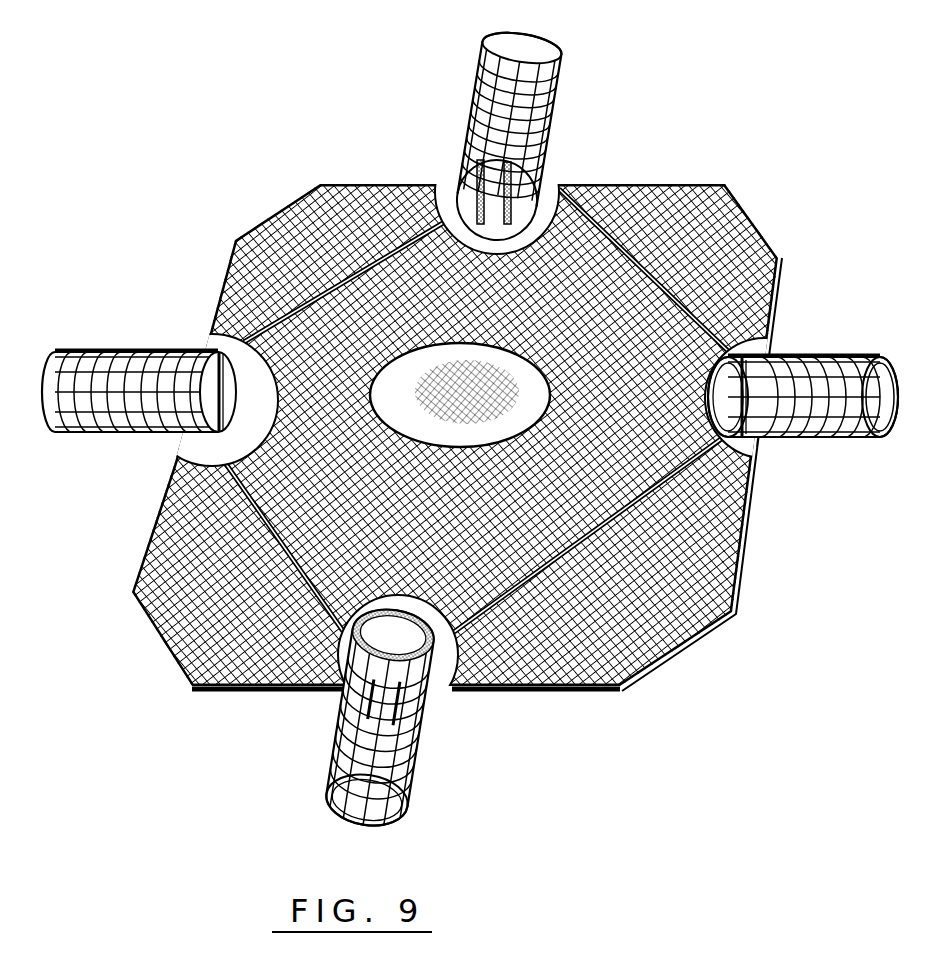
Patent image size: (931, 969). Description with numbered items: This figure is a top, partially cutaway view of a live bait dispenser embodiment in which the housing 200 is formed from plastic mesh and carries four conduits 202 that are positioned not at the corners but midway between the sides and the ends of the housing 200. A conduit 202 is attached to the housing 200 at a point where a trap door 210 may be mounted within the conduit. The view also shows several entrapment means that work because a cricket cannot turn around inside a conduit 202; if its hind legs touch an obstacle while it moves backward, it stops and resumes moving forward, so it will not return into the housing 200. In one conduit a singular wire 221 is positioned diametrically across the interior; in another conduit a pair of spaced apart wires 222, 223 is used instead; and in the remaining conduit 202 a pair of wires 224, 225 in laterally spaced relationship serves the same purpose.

The housing 200 is at (472, 405).
The conduit 202 is at (451, 429).
The trap door 210 is at (438, 688).
The singular wire 221 is at (182, 430).
The wire 222 is at (766, 356).
The wire 223 is at (752, 440).
The wire 224 is at (545, 194).
The wire 225 is at (452, 188).